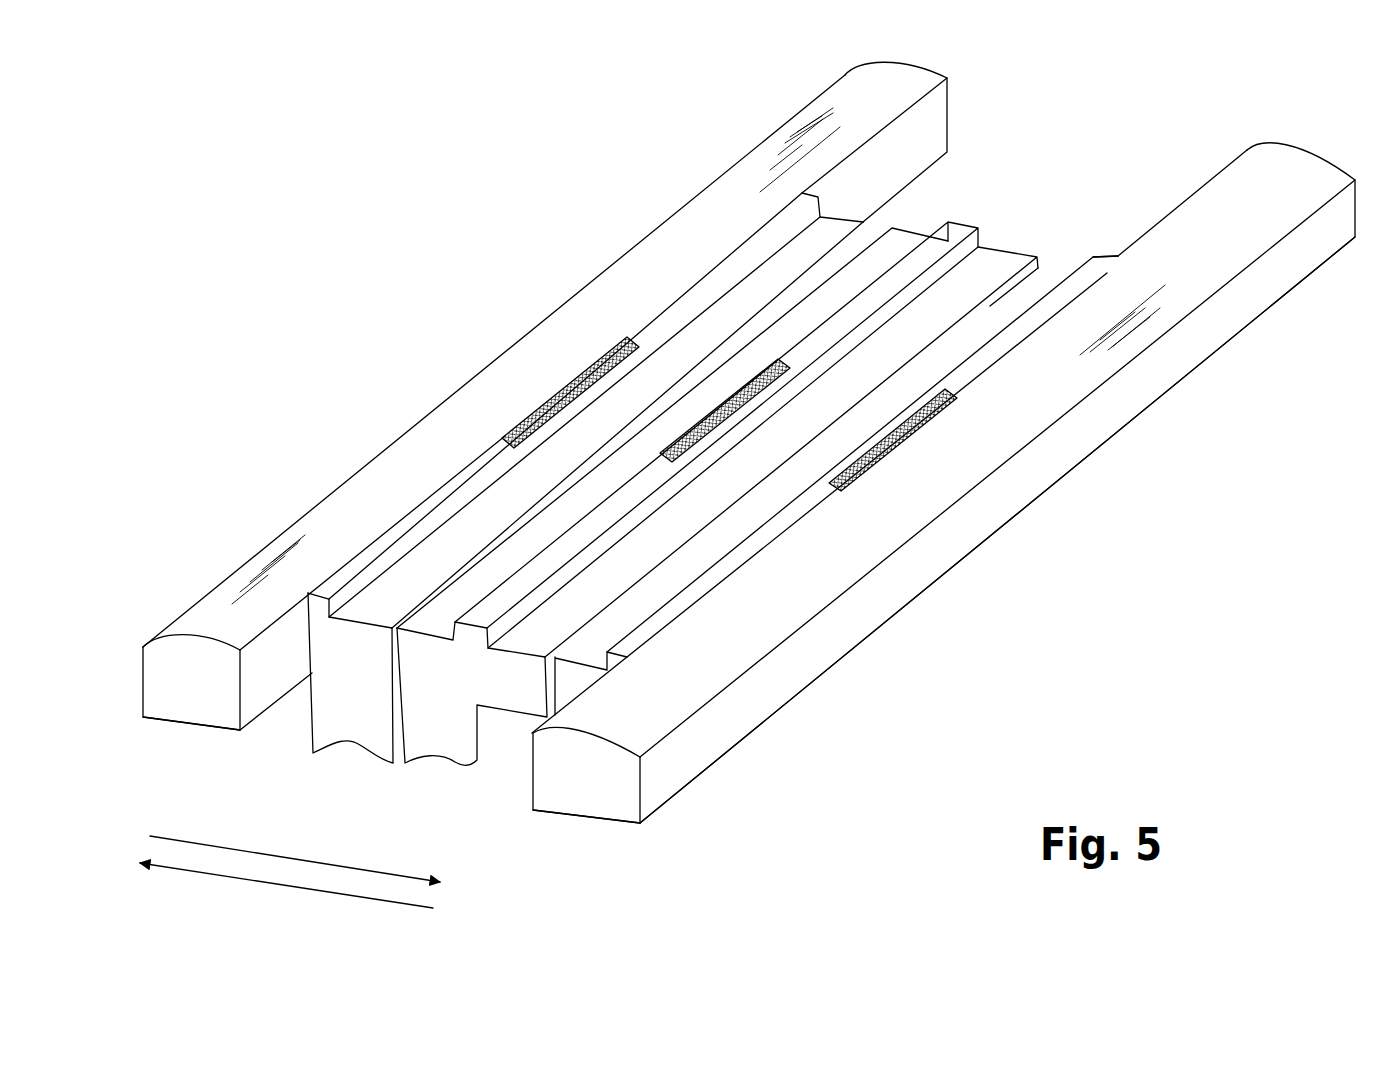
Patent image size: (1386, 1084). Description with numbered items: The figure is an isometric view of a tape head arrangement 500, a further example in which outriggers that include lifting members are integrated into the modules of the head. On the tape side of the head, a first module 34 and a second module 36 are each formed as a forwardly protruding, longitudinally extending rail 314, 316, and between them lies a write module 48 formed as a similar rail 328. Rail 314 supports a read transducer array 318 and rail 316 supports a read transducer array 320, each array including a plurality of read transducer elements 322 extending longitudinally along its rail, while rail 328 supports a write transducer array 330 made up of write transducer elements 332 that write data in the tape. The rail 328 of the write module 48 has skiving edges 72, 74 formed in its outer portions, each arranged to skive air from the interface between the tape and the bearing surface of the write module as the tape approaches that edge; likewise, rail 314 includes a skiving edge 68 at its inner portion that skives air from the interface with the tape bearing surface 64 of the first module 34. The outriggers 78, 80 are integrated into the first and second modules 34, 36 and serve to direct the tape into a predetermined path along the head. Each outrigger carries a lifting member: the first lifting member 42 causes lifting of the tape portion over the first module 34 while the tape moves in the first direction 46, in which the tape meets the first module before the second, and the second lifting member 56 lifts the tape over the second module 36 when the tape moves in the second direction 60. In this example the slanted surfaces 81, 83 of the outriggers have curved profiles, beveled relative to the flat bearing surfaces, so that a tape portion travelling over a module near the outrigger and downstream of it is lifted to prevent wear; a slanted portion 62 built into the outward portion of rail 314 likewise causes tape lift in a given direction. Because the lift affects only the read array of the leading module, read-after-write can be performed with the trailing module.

The tape head arrangement 500 is at (330, 262).
The first lifting member 42 is at (322, 505).
The slanted surface 81 is at (210, 640).
The outrigger 78 is at (165, 718).
The rail 314 is at (820, 185).
The first module 34 is at (285, 733).
The tape bearing surface 64 is at (405, 528).
The skiving edge 68 is at (365, 580).
The read transducer array 318 is at (567, 368).
The read transducer elements 322 is at (627, 335).
The write module 48 is at (478, 785).
The skiving edge 72 is at (460, 605).
The skiving edge 74 is at (510, 620).
The rail 328 is at (955, 222).
The write transducer array 330 is at (672, 465).
The write transducer elements 332 is at (788, 348).
The slanted portion 62 is at (760, 517).
The read transducer array 320 is at (900, 450).
The second module 36 is at (730, 777).
The slanted surface 83 is at (562, 738).
The outrigger 80 is at (630, 822).
The second lifting member 56 is at (858, 553).
The rail 316 is at (1112, 248).
The first direction 46 is at (352, 864).
The second direction 60 is at (255, 880).